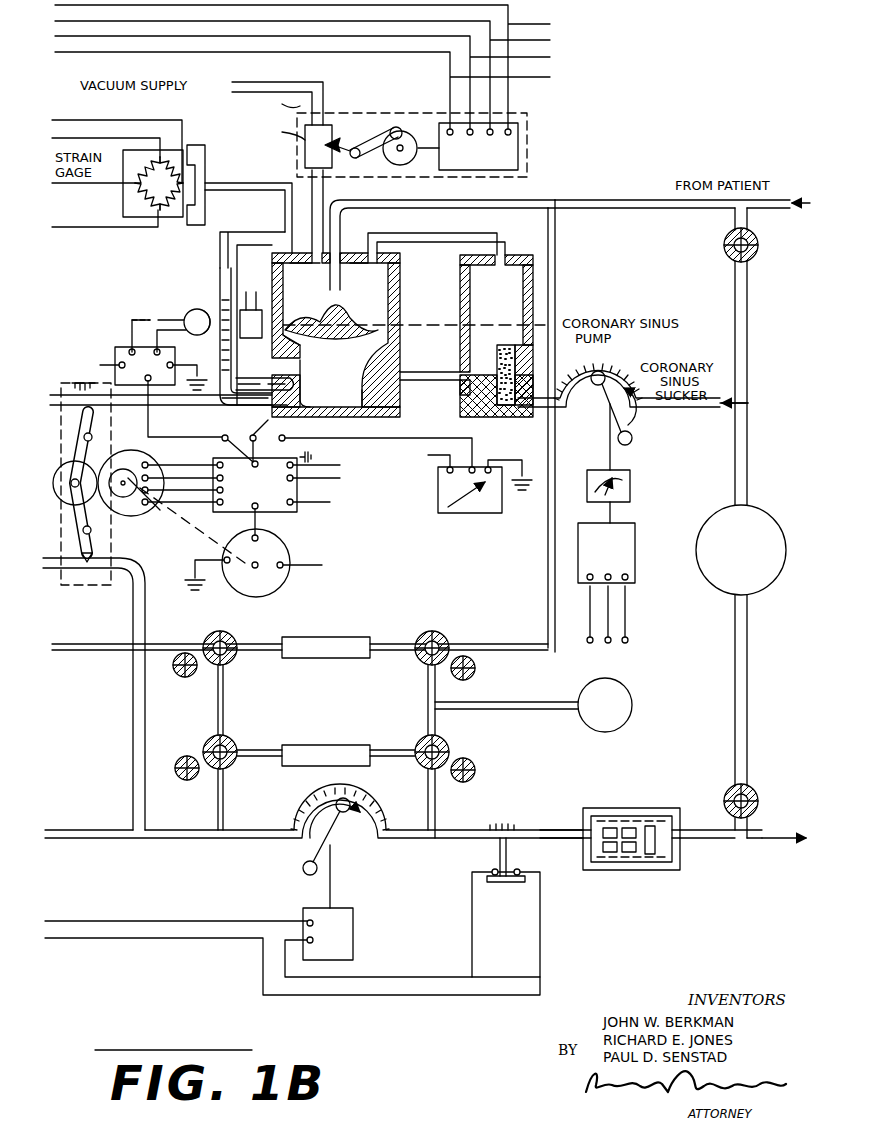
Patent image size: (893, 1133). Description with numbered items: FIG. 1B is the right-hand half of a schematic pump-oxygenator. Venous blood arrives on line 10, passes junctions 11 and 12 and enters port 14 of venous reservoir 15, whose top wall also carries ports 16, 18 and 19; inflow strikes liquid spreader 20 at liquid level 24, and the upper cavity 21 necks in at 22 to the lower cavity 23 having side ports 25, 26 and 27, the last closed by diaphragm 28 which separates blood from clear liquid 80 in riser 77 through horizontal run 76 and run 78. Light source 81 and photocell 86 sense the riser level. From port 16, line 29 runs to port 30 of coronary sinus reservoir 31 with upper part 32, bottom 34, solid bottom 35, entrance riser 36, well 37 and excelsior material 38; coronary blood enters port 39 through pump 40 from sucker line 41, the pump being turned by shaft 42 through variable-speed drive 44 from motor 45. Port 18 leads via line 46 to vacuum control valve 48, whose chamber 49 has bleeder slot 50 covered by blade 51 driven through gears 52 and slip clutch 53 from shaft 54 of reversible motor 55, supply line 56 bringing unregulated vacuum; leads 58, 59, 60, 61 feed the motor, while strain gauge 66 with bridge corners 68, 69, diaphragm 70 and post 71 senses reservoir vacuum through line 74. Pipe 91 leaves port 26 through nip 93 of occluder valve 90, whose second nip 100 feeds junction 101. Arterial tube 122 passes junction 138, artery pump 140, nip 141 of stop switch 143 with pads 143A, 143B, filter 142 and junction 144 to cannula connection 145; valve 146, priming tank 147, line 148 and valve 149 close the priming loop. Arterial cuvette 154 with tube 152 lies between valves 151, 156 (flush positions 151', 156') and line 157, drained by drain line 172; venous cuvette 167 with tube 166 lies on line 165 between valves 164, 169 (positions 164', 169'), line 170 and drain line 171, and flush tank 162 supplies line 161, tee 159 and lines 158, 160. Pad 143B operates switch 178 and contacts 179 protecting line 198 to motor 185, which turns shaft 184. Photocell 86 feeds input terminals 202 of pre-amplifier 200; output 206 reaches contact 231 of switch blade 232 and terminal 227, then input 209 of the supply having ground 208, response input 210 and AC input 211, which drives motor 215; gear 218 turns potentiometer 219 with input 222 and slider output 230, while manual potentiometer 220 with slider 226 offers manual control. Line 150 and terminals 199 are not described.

The venous line 10 is at (760, 212).
The junction 11 is at (731, 210).
The junction 12 is at (562, 206).
The port 14 is at (338, 245).
The venous reservoir 15 is at (392, 280).
The port 16 is at (380, 252).
The port 18 is at (312, 245).
The port 19 is at (272, 256).
The liquid spreader 20 is at (385, 318).
The upper cavity 21 is at (304, 296).
The neck 22 is at (302, 349).
The lower cavity 23 is at (339, 399).
The liquid level line 24 is at (412, 330).
The side port 25 is at (398, 380).
The side port 26 is at (280, 436).
The side port 27 is at (262, 405).
The rubber diaphragm 28 is at (296, 386).
The line 29 is at (448, 233).
The port 30 is at (503, 255).
The coronary sinus reservoir 31 is at (505, 320).
The upper part 32 is at (505, 299).
The bottom 34 is at (523, 356).
The solid bottom 35 is at (512, 420).
The entrance riser 36 is at (470, 410).
The well 37 is at (478, 350).
The plastic excelsior material 38 is at (497, 406).
The port 39 is at (527, 412).
The pump 40 is at (597, 408).
The coronary sinus sucker line 41 is at (668, 406).
The shaft 42 is at (610, 456).
The variable-speed drive 44 is at (630, 486).
The motor 45 is at (635, 556).
The regulated vacuum line 46 is at (318, 205).
The vacuum control valve 48 is at (532, 130).
The chamber 49 is at (281, 133).
The air bleeder opening 50 is at (335, 134).
The rotary blade valve element 51 is at (340, 150).
The gears 52 is at (372, 135).
The slip clutch 53 is at (405, 165).
The shaft 54 is at (428, 142).
The reversible motor 55 is at (485, 159).
The vacuum supply line 56 is at (279, 105).
The lead 58 is at (314, 68).
The lead 59 is at (314, 76).
The lead 60 is at (314, 84).
The lead 61 is at (314, 92).
The strain gauge 66 is at (115, 208).
The bridge corner 68 is at (162, 172).
The bridge corner 69 is at (160, 212).
The vacuum responsive diaphragm 70 is at (205, 165).
The post 71 is at (190, 200).
The line 74 is at (240, 190).
The horizontal run 76 is at (288, 331).
The riser 77 is at (220, 290).
The run 78 is at (242, 232).
The clear liquid 80 is at (236, 405).
The light source 81 is at (217, 352).
The photocell 86 is at (195, 313).
The occluder valve mechanism 90 is at (78, 441).
The plastic pipe 91 is at (203, 393).
The nip 93 is at (62, 395).
The nip 100 is at (118, 570).
The junction 101 is at (131, 828).
The plastic tube 122 is at (170, 838).
The junction 138 is at (218, 828).
The artery pump 140 is at (293, 842).
The nip 141 is at (498, 840).
The filter 142 is at (605, 808).
The high pressure stop switch 143 is at (498, 858).
The stationary pad 143A is at (506, 830).
The pressure responsive pad 143B is at (512, 845).
The junction 144 is at (750, 838).
The artery cannula connection 145 is at (762, 846).
The shut off valve 146 is at (758, 801).
The priming tank 147 is at (762, 515).
The line 148 is at (735, 284).
The valve 149 is at (728, 250).
The line 150 is at (225, 790).
The two-position valve 151 is at (232, 747).
The valve flush position 151' is at (173, 777).
The slender plastic tube 152 is at (285, 757).
The cuvette 154 is at (320, 745).
The two-position valve 156 is at (448, 752).
The valve flush position 156' is at (483, 770).
The line 157 is at (434, 794).
The line 158 is at (430, 708).
The T 159 is at (436, 702).
The line 160 is at (427, 681).
The line 161 is at (510, 704).
The saline solution flush tank 162 is at (632, 701).
The two-position valve 164 is at (446, 641).
The valve flush position 164' is at (483, 668).
The line 165 is at (522, 648).
The slender plastic tube 166 is at (280, 644).
The cuvette 167 is at (340, 637).
The two-position valve 169 is at (232, 639).
The valve flush position 169' is at (173, 674).
The line 170 is at (152, 644).
The drain line 171 is at (225, 665).
The drain line 172 is at (215, 746).
The switch 178 is at (492, 882).
The contacts 179 is at (520, 878).
The shaft 184 is at (340, 886).
The direct current motor 185 is at (353, 950).
The line 198 is at (115, 938).
The terminals 199 is at (306, 940).
The pre-amplifier 200 is at (112, 348).
The input terminals 202 is at (155, 350).
The amplified output 206 is at (148, 400).
The ground 208 is at (311, 458).
The input terminal 209 is at (252, 462).
The response input 210 is at (266, 512).
The AC input 211 is at (296, 496).
The motor 215 is at (125, 514).
The gear 218 is at (197, 522).
The potentiometer 219 is at (292, 590).
The potentiometer 220 is at (440, 508).
The input terminal 222 is at (284, 570).
The slider 226 is at (438, 494).
The switch terminal 227 is at (285, 437).
The slider output terminal 230 is at (262, 538).
The switch contact 231 is at (222, 437).
The switch blade 232 is at (251, 436).